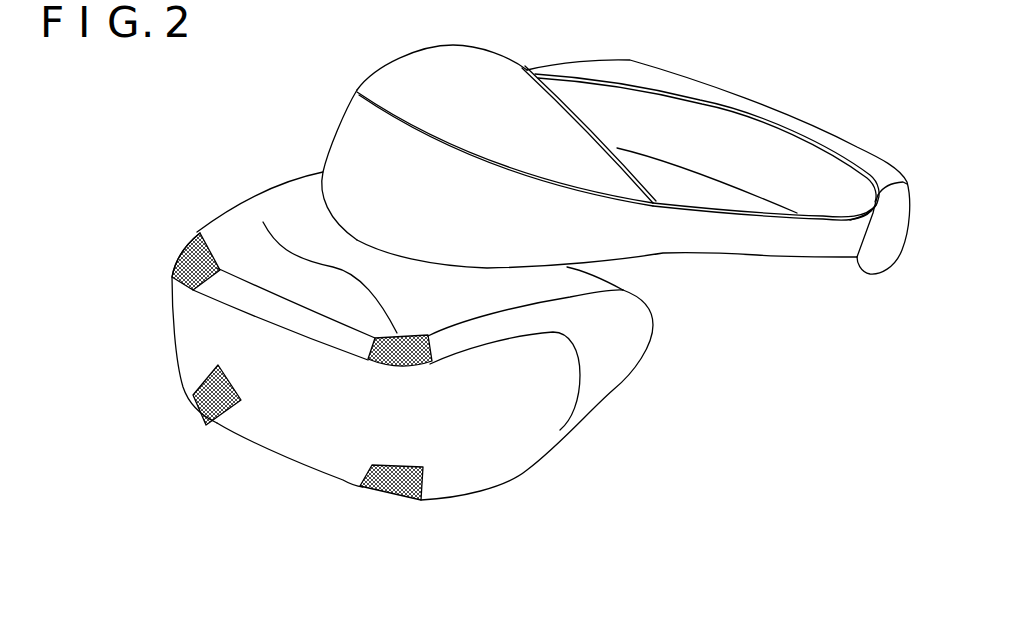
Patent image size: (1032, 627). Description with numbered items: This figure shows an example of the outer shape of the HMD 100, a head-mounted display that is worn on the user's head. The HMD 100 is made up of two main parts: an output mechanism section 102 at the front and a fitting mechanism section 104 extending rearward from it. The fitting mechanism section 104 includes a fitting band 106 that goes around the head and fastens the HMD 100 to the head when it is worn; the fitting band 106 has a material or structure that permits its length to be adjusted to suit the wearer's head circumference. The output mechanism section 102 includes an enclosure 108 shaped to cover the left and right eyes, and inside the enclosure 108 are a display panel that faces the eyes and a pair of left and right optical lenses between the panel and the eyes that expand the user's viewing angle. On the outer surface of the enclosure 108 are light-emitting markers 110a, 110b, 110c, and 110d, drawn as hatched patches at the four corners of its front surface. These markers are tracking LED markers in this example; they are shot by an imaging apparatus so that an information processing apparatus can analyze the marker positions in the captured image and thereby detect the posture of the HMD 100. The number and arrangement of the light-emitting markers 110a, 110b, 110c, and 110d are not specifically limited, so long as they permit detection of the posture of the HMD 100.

The HMD 100 is at (495, 620).
The output mechanism section 102 is at (149, 294).
The fitting mechanism section 104 is at (810, 85).
The fitting band 106 is at (757, 255).
The enclosure 108 is at (522, 471).
The light-emitting marker 110a is at (197, 238).
The light-emitting marker 110b is at (263, 222).
The light-emitting marker 110c is at (206, 425).
The light-emitting marker 110d is at (383, 499).